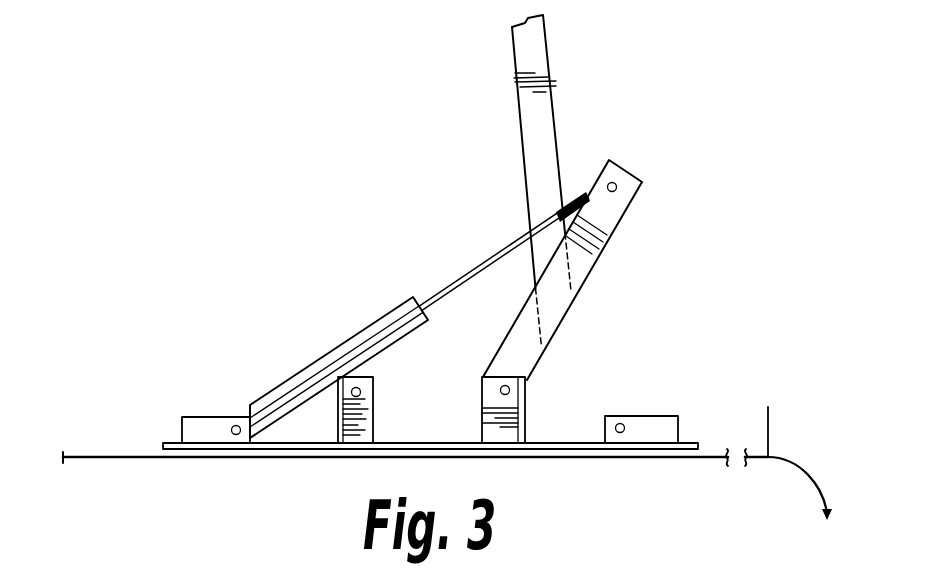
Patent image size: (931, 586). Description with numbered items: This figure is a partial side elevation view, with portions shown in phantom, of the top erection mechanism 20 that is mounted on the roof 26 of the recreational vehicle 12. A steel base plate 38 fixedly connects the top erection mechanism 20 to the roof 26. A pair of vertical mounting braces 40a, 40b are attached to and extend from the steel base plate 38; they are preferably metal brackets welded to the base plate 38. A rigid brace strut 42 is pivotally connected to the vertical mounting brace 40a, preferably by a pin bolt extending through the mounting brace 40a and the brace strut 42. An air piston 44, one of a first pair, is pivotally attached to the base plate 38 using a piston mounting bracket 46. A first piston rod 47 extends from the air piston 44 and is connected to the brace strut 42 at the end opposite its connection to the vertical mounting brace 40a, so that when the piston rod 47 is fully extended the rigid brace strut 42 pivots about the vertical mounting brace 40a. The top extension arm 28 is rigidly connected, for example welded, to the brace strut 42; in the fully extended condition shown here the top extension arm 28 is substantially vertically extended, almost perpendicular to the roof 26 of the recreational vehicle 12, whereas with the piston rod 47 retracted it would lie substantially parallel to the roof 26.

The vehicle 12 is at (768, 407).
The top erection mechanism 20 is at (402, 248).
The roof 26 is at (127, 457).
The top extension arm 28 is at (550, 79).
The steel base plate 38 is at (572, 443).
The vertical mounting brace 40a is at (528, 397).
The vertical mounting brace 40b is at (373, 410).
The rigid brace strut 42 is at (630, 203).
The air piston 44 is at (294, 364).
The piston mounting bracket 46 is at (205, 418).
The first piston rod 47 is at (496, 250).